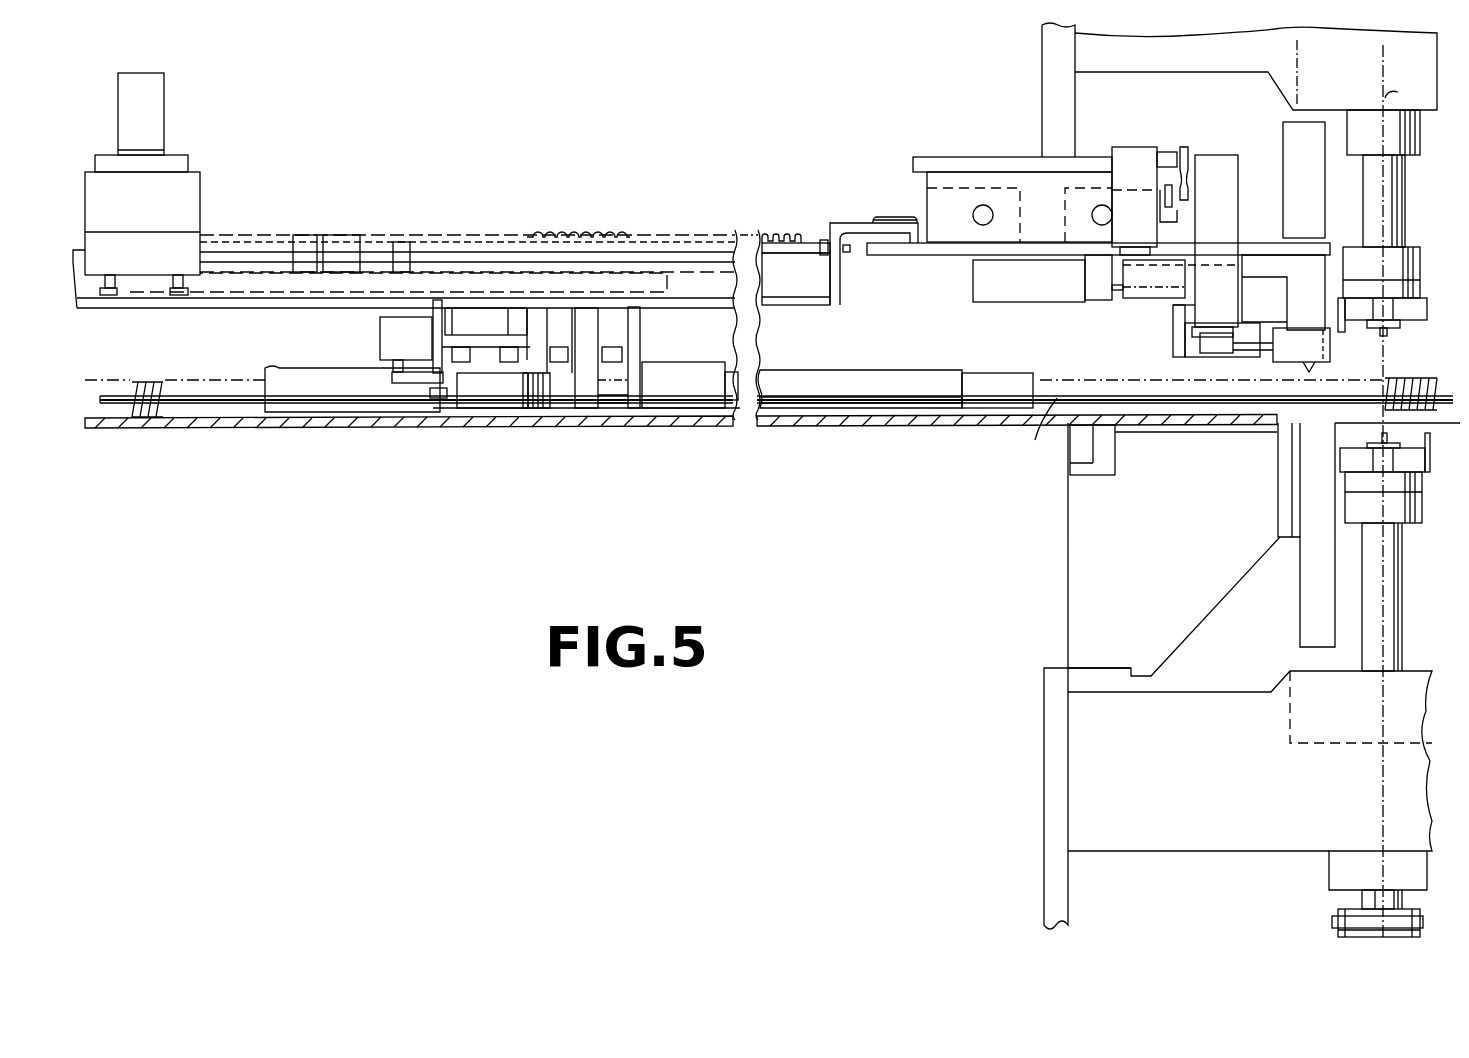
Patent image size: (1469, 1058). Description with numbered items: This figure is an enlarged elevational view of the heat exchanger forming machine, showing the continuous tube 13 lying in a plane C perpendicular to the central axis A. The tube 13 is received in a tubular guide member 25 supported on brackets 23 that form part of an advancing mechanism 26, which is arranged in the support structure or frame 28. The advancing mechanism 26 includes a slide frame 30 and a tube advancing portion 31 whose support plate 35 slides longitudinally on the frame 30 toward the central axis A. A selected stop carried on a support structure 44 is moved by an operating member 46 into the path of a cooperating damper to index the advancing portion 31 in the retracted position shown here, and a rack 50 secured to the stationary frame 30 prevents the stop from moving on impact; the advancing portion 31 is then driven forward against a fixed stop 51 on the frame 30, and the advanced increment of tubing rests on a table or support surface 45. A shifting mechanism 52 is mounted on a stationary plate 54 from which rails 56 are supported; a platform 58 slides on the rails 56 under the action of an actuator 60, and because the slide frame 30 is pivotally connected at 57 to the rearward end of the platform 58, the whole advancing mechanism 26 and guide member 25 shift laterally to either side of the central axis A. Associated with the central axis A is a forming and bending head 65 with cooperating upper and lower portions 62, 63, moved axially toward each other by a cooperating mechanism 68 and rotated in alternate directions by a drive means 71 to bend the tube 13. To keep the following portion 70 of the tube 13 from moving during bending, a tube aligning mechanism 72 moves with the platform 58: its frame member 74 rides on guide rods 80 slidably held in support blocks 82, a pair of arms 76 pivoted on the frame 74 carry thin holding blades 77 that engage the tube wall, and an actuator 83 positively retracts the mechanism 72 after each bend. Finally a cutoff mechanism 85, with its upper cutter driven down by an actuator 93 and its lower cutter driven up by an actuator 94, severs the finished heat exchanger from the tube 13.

The tube 13 is at (1447, 394).
The brackets 23 is at (432, 334).
The tubular guide member 25 is at (896, 352).
The advancing mechanism 26 is at (358, 345).
The support structure or frame 28 is at (1040, 73).
The slide frame 30 is at (798, 240).
The tube advancing portion 31 is at (503, 395).
The support plate 35 is at (658, 281).
The support structure 44 is at (195, 205).
The table or support surface 45 is at (1187, 430).
The operating member 46 is at (160, 117).
The rack 50 is at (572, 233).
The fixed stop 51 is at (821, 240).
The shifting mechanism 52 is at (972, 150).
The stationary plate 54 is at (920, 158).
The rails 56 is at (1090, 215).
The pivotal connection 57 is at (893, 217).
The platform 58 is at (938, 258).
The actuator 60 is at (1137, 150).
The upper portion 62 is at (1373, 213).
The lower portion 63 is at (1414, 510).
The forming and bending head 65 is at (1428, 328).
The cooperating mechanism 68 is at (1293, 92).
The following or subsequent portion 70 is at (1107, 395).
The drive means 71 is at (1238, 676).
The tube aligning mechanism 72 is at (1215, 246).
The frame member 74 is at (1188, 310).
The arms 76 is at (1200, 340).
The tube holding blades or members 77 is at (1330, 352).
The guide rods 80 is at (1118, 297).
The support blocks 82 is at (1106, 293).
The actuator 83 is at (985, 288).
The cutoff mechanism 85 is at (1283, 292).
The actuator 93 is at (1290, 155).
The actuator 94 is at (1290, 625).
The central axis A is at (1399, 492).
The plane C is at (1037, 429).